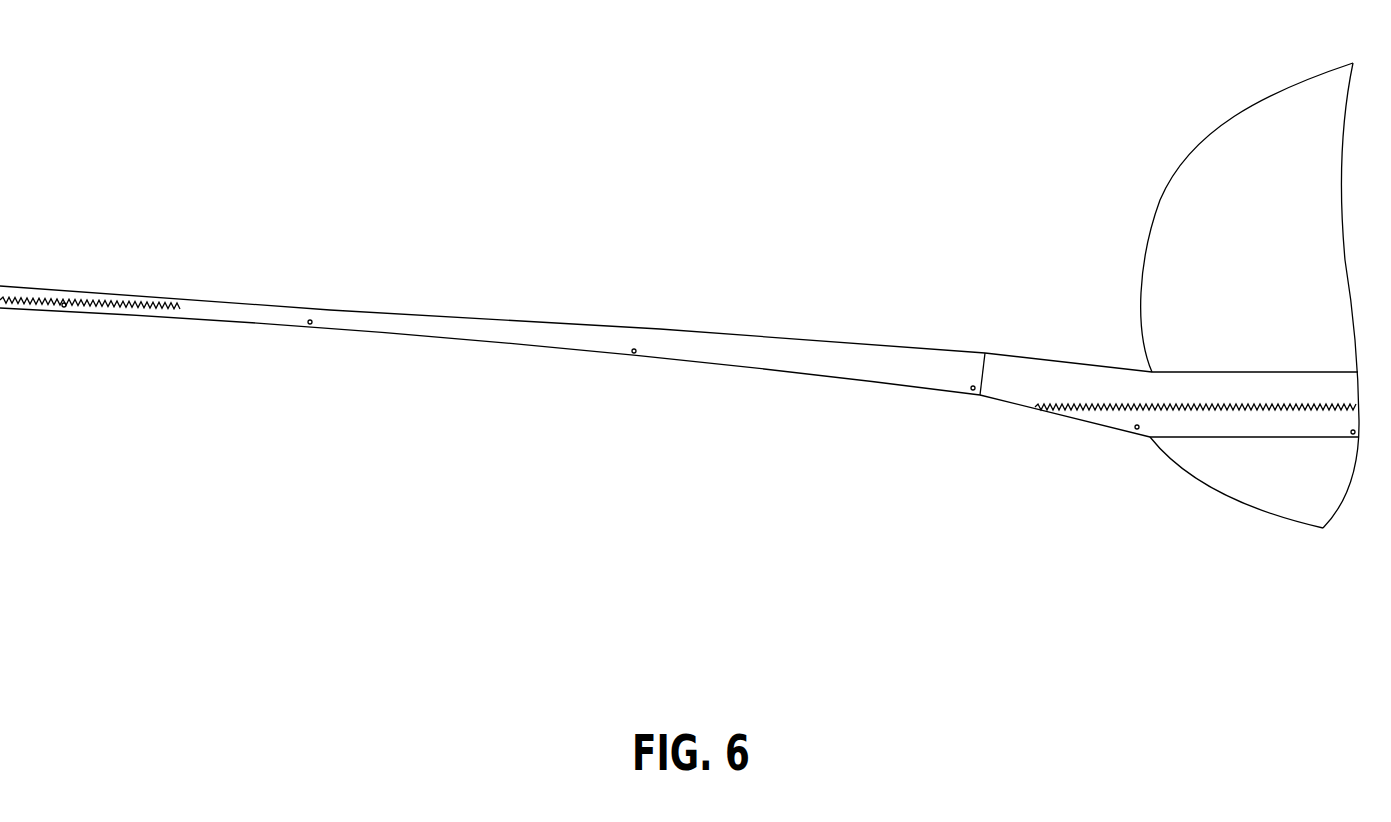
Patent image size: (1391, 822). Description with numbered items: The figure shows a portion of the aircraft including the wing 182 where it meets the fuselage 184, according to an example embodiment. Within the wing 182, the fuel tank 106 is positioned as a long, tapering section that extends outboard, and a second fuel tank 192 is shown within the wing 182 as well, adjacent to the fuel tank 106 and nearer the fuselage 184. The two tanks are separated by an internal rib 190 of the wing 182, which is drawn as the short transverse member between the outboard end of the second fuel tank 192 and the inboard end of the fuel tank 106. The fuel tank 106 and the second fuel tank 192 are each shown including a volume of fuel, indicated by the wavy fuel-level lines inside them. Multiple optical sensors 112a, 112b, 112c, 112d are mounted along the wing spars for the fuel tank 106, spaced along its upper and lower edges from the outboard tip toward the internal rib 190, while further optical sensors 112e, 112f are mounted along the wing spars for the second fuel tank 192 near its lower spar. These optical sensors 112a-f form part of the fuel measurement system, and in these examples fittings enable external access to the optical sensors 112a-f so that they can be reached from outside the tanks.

The fuel tank 106 is at (455, 317).
The wing 182 is at (222, 290).
The fuselage 184 is at (1158, 182).
The internal rib 190 is at (980, 368).
The second fuel tank 192 is at (1105, 370).
The optical sensor 112a is at (64, 312).
The optical sensor 112b is at (307, 327).
The optical sensor 112c is at (640, 365).
The optical sensor 112d is at (971, 393).
The optical sensor 112e is at (1142, 445).
The optical sensor 112f is at (1345, 452).